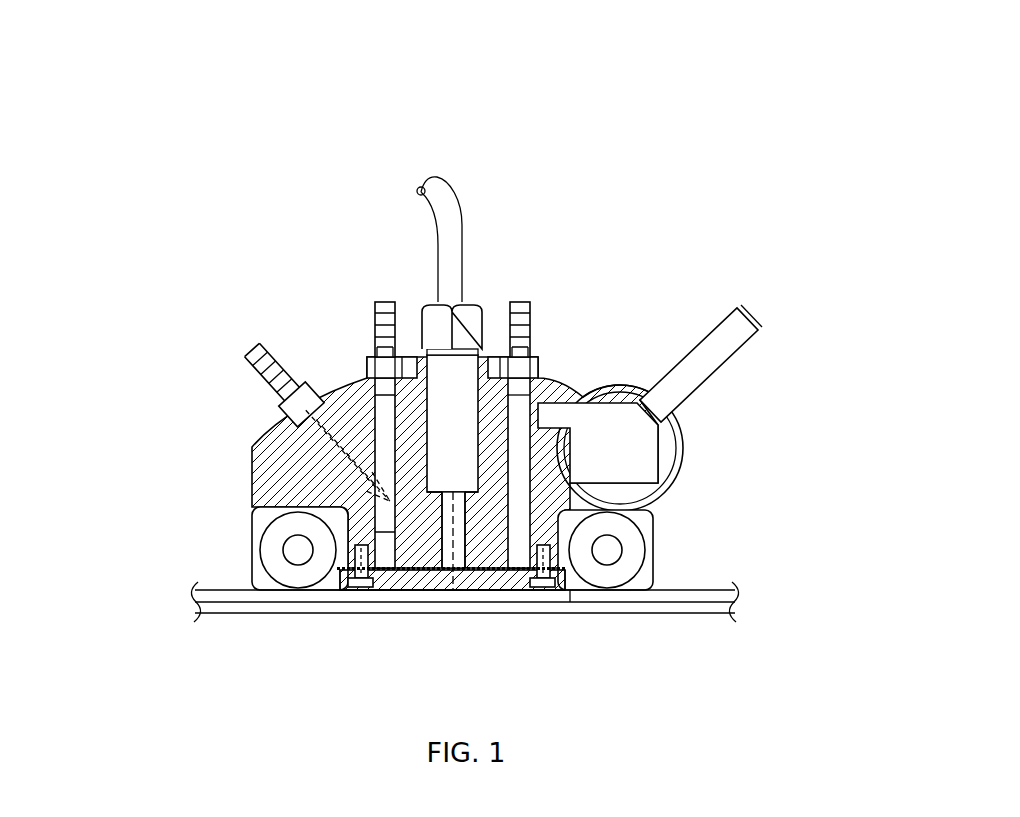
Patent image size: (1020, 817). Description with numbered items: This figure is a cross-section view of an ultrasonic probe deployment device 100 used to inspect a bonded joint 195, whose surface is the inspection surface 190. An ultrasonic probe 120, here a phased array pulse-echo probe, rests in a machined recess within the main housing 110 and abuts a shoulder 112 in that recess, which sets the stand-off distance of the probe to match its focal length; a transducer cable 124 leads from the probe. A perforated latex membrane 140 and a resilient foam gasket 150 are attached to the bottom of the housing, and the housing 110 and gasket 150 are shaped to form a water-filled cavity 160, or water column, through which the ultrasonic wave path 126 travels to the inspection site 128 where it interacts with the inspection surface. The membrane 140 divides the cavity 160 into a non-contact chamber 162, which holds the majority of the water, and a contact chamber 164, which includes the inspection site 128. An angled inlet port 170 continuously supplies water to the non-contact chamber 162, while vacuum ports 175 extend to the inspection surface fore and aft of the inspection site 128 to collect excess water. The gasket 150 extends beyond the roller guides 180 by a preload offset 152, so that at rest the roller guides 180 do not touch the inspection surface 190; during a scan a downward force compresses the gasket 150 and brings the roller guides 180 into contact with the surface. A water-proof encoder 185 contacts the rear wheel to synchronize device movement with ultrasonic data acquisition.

The ultrasonic probe deployment device 100 is at (421, 21).
The main housing 110 is at (353, 462).
The shoulder 112 is at (573, 323).
The ultrasonic probe 120 is at (553, 288).
The transducer cable 124 is at (345, 184).
The ultrasonic wave path 126 is at (357, 620).
The inspection site 128 is at (541, 669).
The perforated membrane 140 is at (399, 623).
The foam gasket 150 is at (529, 620).
The preload offset 152 is at (726, 642).
The cavity 160 is at (660, 528).
The non-contact chamber 162 is at (676, 456).
The contact chamber 164 is at (612, 552).
The angled inlet port 170 is at (225, 401).
The vacuum ports 175 is at (375, 352).
The roller guides 180 is at (358, 557).
The encoder 185 is at (706, 358).
The inspection surface 190 is at (501, 621).
The bonded joint 195 is at (427, 655).